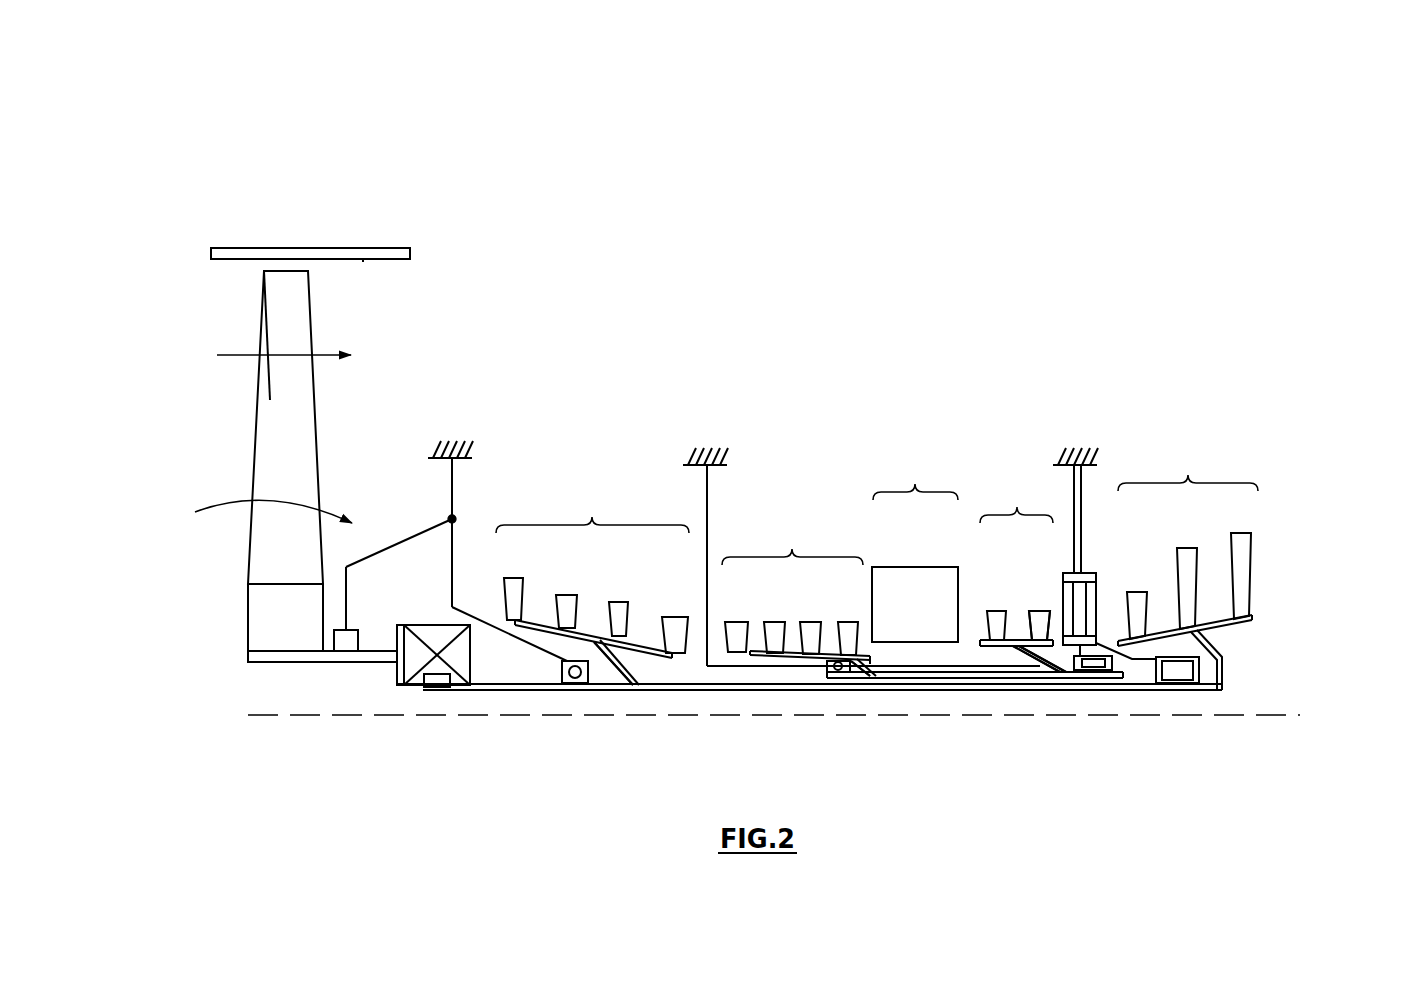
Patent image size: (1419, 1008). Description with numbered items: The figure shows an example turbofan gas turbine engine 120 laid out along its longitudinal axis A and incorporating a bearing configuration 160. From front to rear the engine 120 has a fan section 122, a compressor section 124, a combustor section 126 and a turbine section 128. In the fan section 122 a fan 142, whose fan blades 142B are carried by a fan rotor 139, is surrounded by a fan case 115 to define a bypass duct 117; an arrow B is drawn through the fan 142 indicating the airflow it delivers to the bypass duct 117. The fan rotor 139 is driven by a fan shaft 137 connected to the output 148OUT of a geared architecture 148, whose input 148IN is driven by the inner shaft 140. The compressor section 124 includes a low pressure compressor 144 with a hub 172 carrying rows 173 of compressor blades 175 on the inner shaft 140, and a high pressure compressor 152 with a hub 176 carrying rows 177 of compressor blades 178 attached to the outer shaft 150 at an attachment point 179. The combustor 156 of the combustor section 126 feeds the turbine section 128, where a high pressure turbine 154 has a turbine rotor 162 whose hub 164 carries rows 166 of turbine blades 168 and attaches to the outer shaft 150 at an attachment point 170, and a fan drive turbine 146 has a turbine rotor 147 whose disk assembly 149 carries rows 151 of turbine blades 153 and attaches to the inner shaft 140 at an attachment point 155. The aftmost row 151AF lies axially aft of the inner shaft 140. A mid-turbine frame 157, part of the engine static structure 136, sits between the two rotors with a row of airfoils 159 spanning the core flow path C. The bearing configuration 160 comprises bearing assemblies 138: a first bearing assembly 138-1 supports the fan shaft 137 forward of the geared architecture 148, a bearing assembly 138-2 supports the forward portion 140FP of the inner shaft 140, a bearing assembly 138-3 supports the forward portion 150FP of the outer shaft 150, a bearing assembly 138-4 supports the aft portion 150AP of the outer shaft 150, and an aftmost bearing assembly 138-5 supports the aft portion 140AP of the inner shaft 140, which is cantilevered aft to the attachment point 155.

The turbofan gas turbine engine 120 is at (128, 130).
The fan section 122 is at (213, 213).
The fan case 115 is at (343, 248).
The bypass duct 117 is at (363, 259).
The fan 142 is at (255, 423).
The fan blades 142B is at (264, 327).
The direction B is at (217, 355).
The core flow path C is at (208, 500).
The fan rotor 139 is at (258, 622).
The fan shaft 137 is at (278, 662).
The bearing assemblies 138 is at (346, 640).
The first bearing assembly 138-1 is at (345, 651).
The compressor section 124 is at (507, 360).
The engine static structure 136 is at (453, 440).
The low pressure compressor 144 is at (602, 602).
The compressor blades 175 is at (525, 600).
The rows of compressor blades 173 is at (572, 600).
The geared architecture 148 is at (460, 657).
The output 148OUT is at (400, 685).
The input 148IN is at (437, 688).
The second bearing assembly 138-2 is at (554, 692).
The hub 172 is at (614, 683).
The inner shaft 140 is at (720, 692).
The forward portion of the inner shaft 140FP is at (462, 692).
The aft portion of the inner shaft 140AP is at (1211, 692).
The high pressure compressor 152 is at (796, 580).
The rows of compressor blades 177 is at (738, 621).
The compressor blades 178 is at (787, 621).
The hub 176 is at (876, 666).
The third bearing assembly 138-3 is at (838, 677).
The attachment point 179 is at (866, 678).
The outer shaft 150 is at (960, 677).
The forward portion of the outer shaft 150FP is at (830, 678).
The aft portion of the outer shaft 150AP is at (1089, 679).
The turbine section 128 is at (955, 438).
The combustor section 126 is at (915, 480).
The combustor 156 is at (906, 578).
The high pressure turbine 154 is at (1008, 617).
The turbine blades 168 is at (996, 628).
The hub 164 is at (1035, 624).
The high pressure turbine rotor 162 is at (1000, 560).
The rows of turbine blades 166 is at (1042, 620).
The attachment point 170 is at (1058, 682).
The mid-turbine frame 157 is at (1084, 572).
The airfoils 159 is at (1089, 604).
The fourth bearing assembly 138-4 is at (1081, 672).
The bearing configuration 160 is at (1340, 475).
The disk assembly 149 is at (1226, 668).
The fan drive turbine 146 is at (1233, 537).
The fan drive turbine rotor 147 is at (1233, 565).
The rows of turbine blades 151 is at (1138, 592).
The turbine blades 153 is at (1190, 573).
The aftmost row 151AF is at (1245, 591).
The attachment point 155 is at (1229, 699).
The fifth bearing assembly 138-5 is at (1178, 686).
The longitudinal axis A is at (1298, 712).